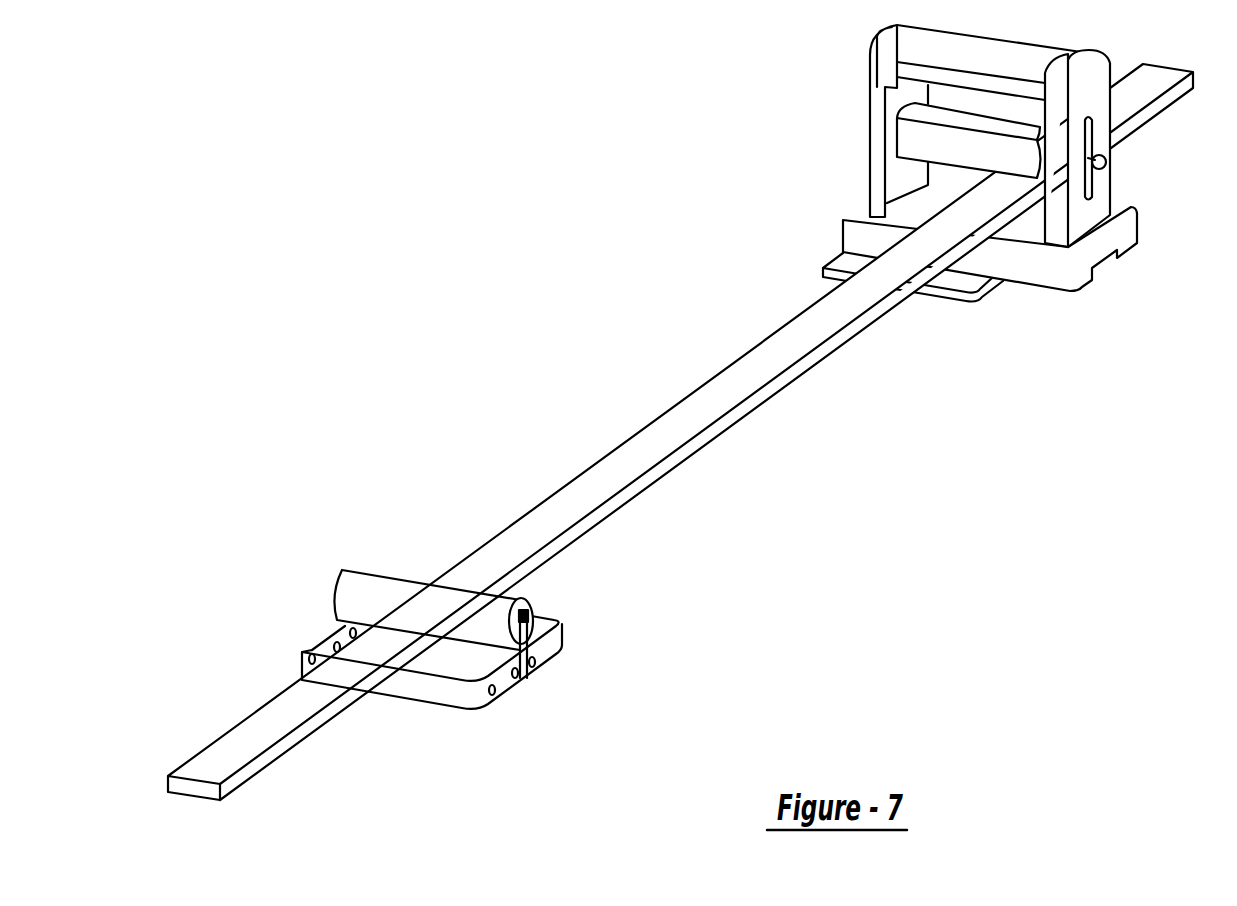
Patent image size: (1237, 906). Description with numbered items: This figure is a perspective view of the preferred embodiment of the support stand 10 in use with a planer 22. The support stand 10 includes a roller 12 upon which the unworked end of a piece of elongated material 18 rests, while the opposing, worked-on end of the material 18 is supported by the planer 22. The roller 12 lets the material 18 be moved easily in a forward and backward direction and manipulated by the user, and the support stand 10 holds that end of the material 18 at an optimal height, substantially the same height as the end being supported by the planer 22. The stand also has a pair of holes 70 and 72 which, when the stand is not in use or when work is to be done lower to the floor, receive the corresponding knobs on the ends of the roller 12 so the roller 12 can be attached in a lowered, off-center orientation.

The support stand 10 is at (411, 603).
The roller 12 is at (532, 601).
The material 18 is at (596, 485).
The planer 22 is at (980, 163).
The hole 70 is at (497, 690).
The hole 72 is at (302, 655).